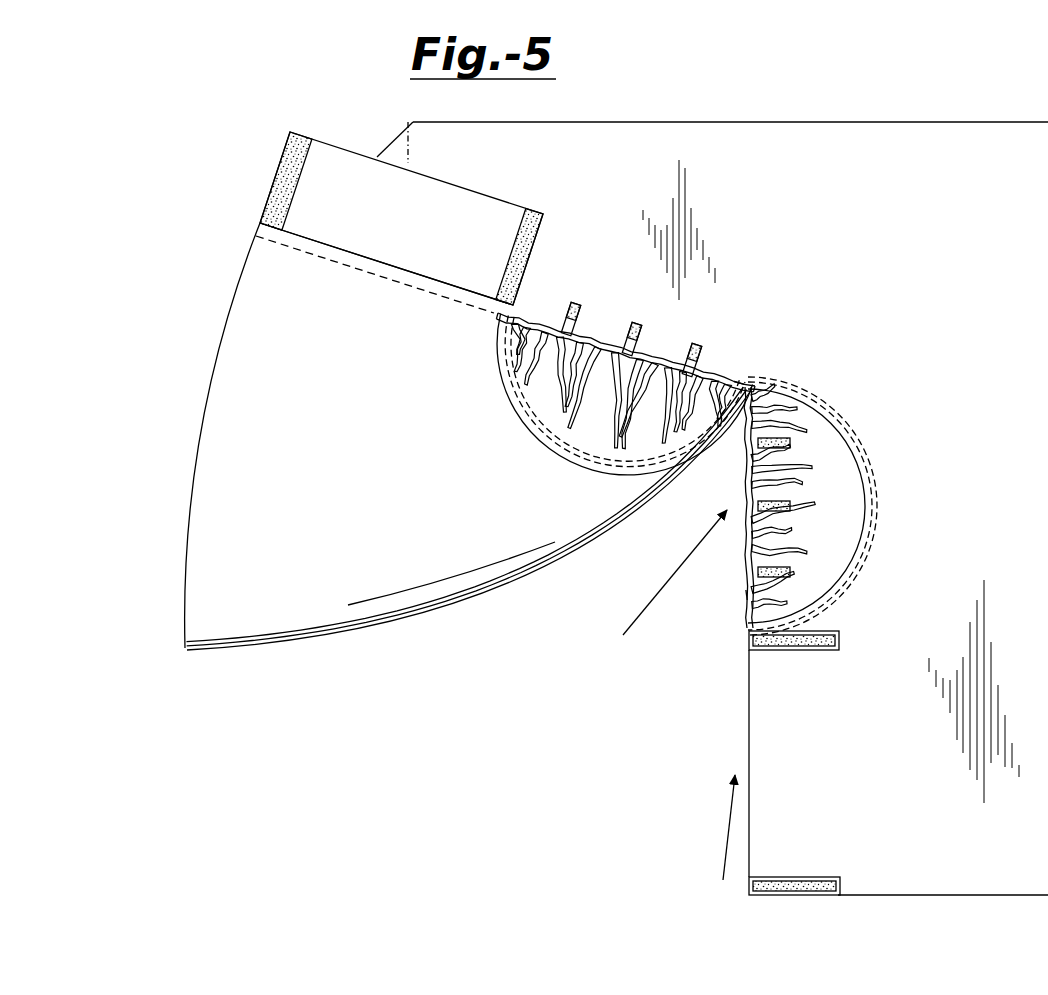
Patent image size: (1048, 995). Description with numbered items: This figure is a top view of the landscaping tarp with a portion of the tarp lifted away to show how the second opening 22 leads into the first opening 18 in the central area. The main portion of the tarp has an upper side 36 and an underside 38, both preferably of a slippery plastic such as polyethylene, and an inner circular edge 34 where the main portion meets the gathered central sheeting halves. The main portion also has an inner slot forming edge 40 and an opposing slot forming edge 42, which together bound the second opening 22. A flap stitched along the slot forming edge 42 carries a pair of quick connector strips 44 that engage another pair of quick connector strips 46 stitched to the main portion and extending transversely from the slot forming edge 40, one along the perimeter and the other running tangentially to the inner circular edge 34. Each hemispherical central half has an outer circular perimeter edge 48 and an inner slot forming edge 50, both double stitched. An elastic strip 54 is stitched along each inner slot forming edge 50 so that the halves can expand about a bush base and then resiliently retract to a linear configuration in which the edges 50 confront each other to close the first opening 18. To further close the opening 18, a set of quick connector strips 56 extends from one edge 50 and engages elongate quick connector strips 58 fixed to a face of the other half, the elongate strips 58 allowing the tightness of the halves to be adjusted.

The first opening 18 is at (667, 583).
The second opening 22 is at (720, 843).
The inner circular edge 34 is at (872, 518).
The upper side 36 is at (944, 284).
The underside 38 is at (362, 407).
The inner slot forming edge 40 is at (748, 723).
The opposing slot forming edge 42 is at (357, 252).
The quick connector strips 44 is at (276, 180).
The quick connector strips 46 is at (800, 650).
The outer circular perimeter edge 48 is at (538, 445).
The inner slot forming edge 50 is at (735, 378).
The elastic strip 54 is at (540, 310).
The quick connector strips 56 is at (580, 312).
The quick connector strips 58 is at (793, 441).